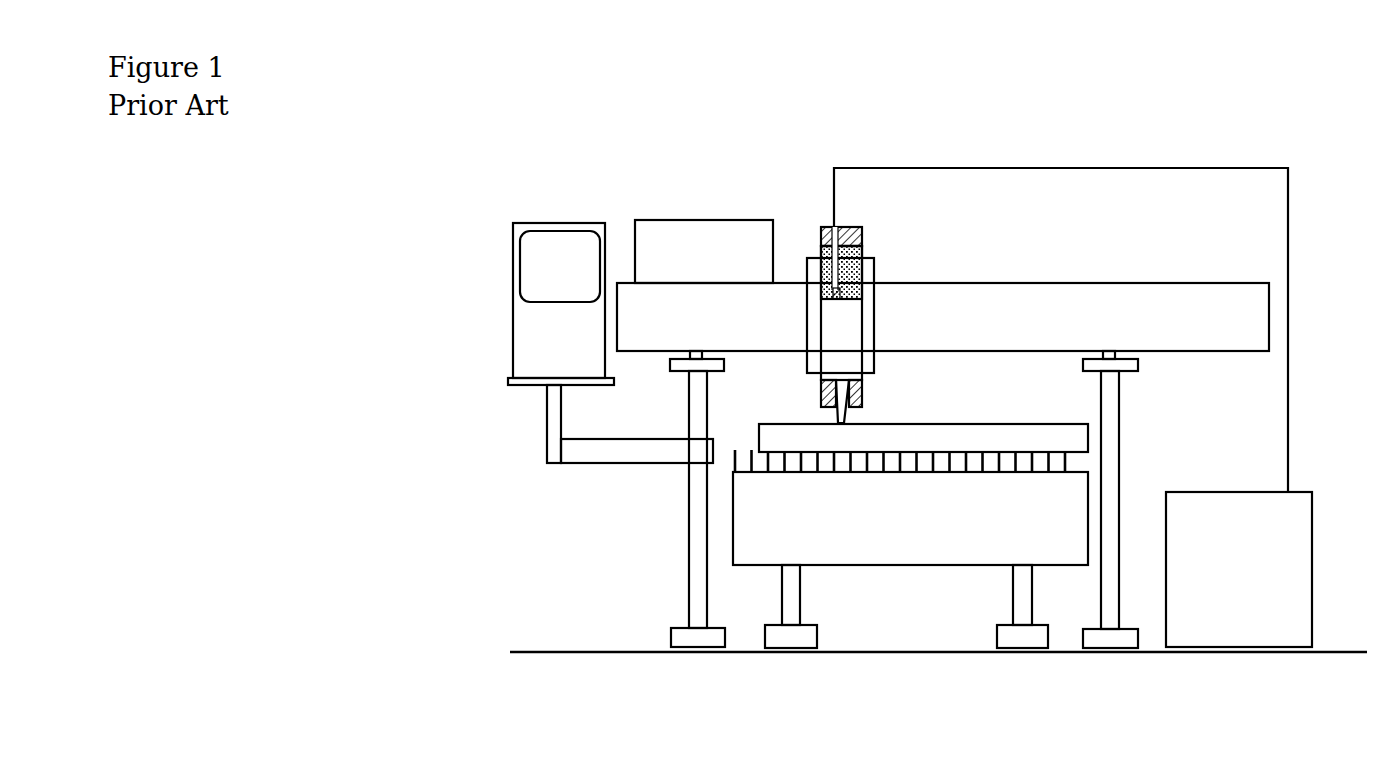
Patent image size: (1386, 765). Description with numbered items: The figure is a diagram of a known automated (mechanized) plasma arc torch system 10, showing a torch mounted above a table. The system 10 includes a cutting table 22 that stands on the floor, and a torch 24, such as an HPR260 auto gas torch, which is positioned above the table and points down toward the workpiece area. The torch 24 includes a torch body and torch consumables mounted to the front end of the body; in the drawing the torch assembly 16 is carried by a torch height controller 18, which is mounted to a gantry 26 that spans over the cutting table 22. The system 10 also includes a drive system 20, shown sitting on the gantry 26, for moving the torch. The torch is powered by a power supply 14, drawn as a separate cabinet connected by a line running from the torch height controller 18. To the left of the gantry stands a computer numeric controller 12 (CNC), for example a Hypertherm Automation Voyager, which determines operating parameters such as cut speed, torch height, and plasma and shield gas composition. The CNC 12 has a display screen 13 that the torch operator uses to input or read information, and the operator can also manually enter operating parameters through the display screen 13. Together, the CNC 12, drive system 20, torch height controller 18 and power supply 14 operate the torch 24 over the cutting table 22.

The automated torch system 10 is at (921, 58).
The computer numeric controller 12 is at (513, 340).
The display screen 13 is at (528, 256).
The power supply 14 is at (1313, 528).
The dispenser body 16 is at (855, 333).
The torch height controller 18 is at (858, 241).
The drive system 20 is at (673, 219).
The cutting table 22 is at (914, 566).
The torch 24 is at (845, 418).
The gantry 26 is at (1183, 283).